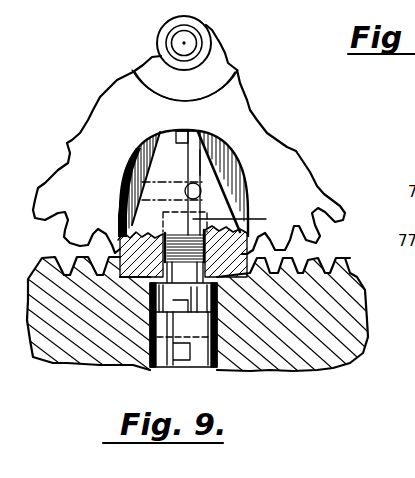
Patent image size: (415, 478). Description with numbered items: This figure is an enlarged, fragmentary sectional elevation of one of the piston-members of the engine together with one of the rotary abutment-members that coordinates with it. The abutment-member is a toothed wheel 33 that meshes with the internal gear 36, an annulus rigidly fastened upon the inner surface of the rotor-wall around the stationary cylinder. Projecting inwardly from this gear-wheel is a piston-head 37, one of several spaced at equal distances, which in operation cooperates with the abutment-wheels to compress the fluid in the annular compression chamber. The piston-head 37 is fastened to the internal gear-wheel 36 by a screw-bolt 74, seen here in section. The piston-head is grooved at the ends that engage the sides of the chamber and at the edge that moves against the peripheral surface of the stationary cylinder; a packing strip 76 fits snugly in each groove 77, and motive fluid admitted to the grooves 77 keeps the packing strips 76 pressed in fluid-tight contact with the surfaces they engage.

The gear 33 is at (260, 143).
The internal gear 36 is at (327, 310).
The piston-head 37 is at (213, 197).
The screw-bolt 74 is at (173, 300).
The packing strip 76 is at (180, 133).
The groove 77 is at (200, 163).